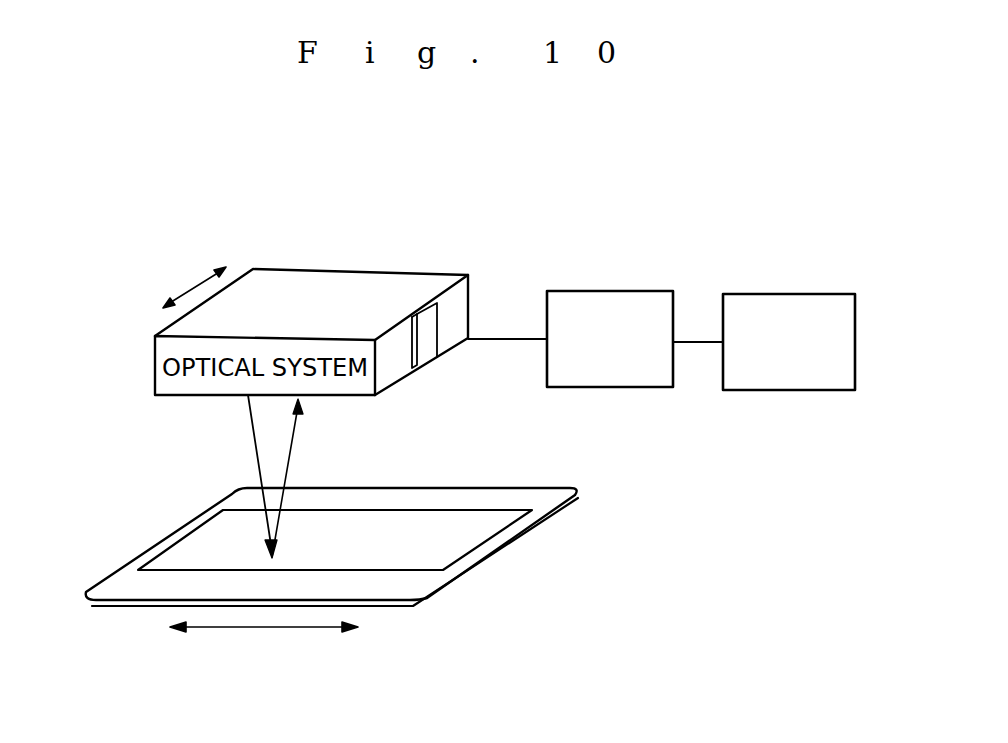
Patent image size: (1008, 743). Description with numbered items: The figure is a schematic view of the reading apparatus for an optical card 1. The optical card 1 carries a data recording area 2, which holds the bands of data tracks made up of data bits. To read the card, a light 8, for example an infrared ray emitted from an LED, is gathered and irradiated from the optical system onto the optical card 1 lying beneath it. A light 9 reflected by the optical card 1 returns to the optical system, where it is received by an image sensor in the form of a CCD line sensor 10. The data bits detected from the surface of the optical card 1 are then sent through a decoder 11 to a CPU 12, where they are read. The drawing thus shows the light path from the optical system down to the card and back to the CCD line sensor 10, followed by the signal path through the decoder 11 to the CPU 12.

The optical card 1 is at (555, 503).
The data recording area 2 is at (463, 545).
The light 8 is at (252, 438).
The reflected light 9 is at (293, 437).
The CCD line sensor 10 is at (427, 350).
The decoder 11 is at (613, 302).
The CPU 12 is at (830, 302).